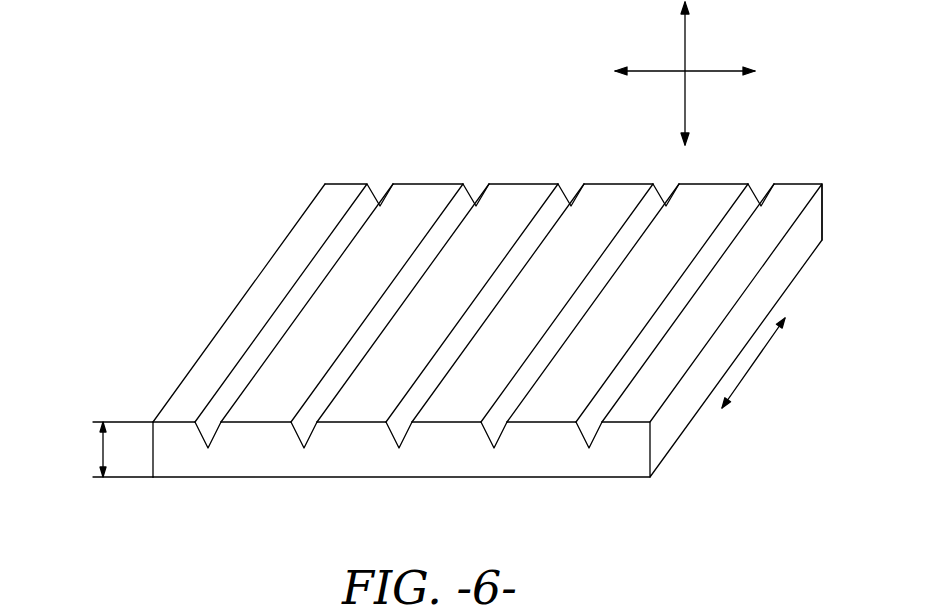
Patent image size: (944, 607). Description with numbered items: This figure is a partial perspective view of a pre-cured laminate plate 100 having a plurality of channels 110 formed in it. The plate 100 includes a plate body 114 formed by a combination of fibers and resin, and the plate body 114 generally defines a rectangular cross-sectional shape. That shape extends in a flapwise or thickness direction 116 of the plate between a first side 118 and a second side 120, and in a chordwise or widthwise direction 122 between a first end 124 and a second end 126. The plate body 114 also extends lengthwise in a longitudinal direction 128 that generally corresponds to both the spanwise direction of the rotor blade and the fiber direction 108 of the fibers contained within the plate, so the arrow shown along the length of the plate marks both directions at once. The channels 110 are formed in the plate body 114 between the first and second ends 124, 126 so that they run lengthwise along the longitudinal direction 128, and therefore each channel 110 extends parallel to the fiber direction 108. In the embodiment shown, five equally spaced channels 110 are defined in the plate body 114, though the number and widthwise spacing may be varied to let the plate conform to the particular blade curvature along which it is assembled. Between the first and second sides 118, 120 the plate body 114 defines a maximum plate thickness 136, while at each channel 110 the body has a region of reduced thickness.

The pre-cured laminate plate 100 is at (260, 152).
The fiber direction 108 is at (782, 381).
The longitudinal direction 128 is at (748, 372).
The channel 110 is at (217, 415).
The plate body 114 is at (250, 315).
The flapwise or thickness direction 116 is at (688, 48).
The first side 118 is at (207, 365).
The second side 120 is at (243, 477).
The chordwise or widthwise direction 122 is at (660, 70).
The first end 124 is at (152, 452).
The second end 126 is at (675, 417).
The plate thickness 136 is at (98, 450).